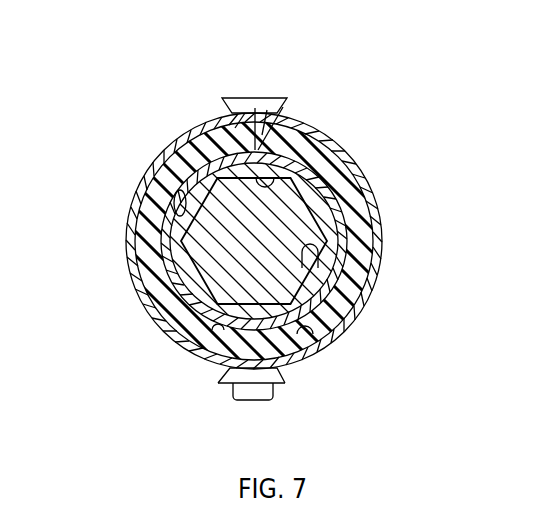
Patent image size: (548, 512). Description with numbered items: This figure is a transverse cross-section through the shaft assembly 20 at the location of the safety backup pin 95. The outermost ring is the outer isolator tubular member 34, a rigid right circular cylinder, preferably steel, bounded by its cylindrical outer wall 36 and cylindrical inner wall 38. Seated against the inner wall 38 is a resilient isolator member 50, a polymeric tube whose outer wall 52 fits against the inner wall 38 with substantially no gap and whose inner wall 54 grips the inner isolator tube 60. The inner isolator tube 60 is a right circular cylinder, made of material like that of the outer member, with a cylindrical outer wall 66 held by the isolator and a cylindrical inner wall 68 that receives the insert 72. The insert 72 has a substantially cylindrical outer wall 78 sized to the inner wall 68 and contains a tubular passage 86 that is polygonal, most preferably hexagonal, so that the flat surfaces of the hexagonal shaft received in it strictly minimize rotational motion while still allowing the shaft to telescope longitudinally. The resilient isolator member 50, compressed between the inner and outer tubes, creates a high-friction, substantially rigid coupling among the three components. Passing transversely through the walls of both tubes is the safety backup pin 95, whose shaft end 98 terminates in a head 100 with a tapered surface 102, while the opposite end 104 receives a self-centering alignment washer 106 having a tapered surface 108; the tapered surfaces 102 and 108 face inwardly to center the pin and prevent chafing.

The shaft assembly 20 is at (110, 321).
The outer isolator tubular member 34 is at (333, 338).
The cylindrical outer wall 36 is at (162, 333).
The cylindrical inner wall 38 is at (300, 362).
The resilient isolator member 50 is at (188, 170).
The outer wall 52 is at (197, 138).
The inner wall 54 is at (150, 166).
The inner isolator tube 60 is at (315, 178).
The cylindrical outer wall 66 is at (282, 100).
The cylindrical inner wall 68 is at (313, 138).
The insert 72 is at (310, 262).
The outer wall 78 is at (350, 205).
The tubular passage 86 is at (313, 273).
The safety backup pin 95 is at (285, 88).
The end of pin shaft 98 is at (265, 97).
The head 100 is at (265, 97).
The tapered surface 102 is at (223, 105).
The opposite end 104 is at (235, 393).
The self-centering alignment washer 106 is at (280, 390).
The tapered surface 108 is at (220, 375).